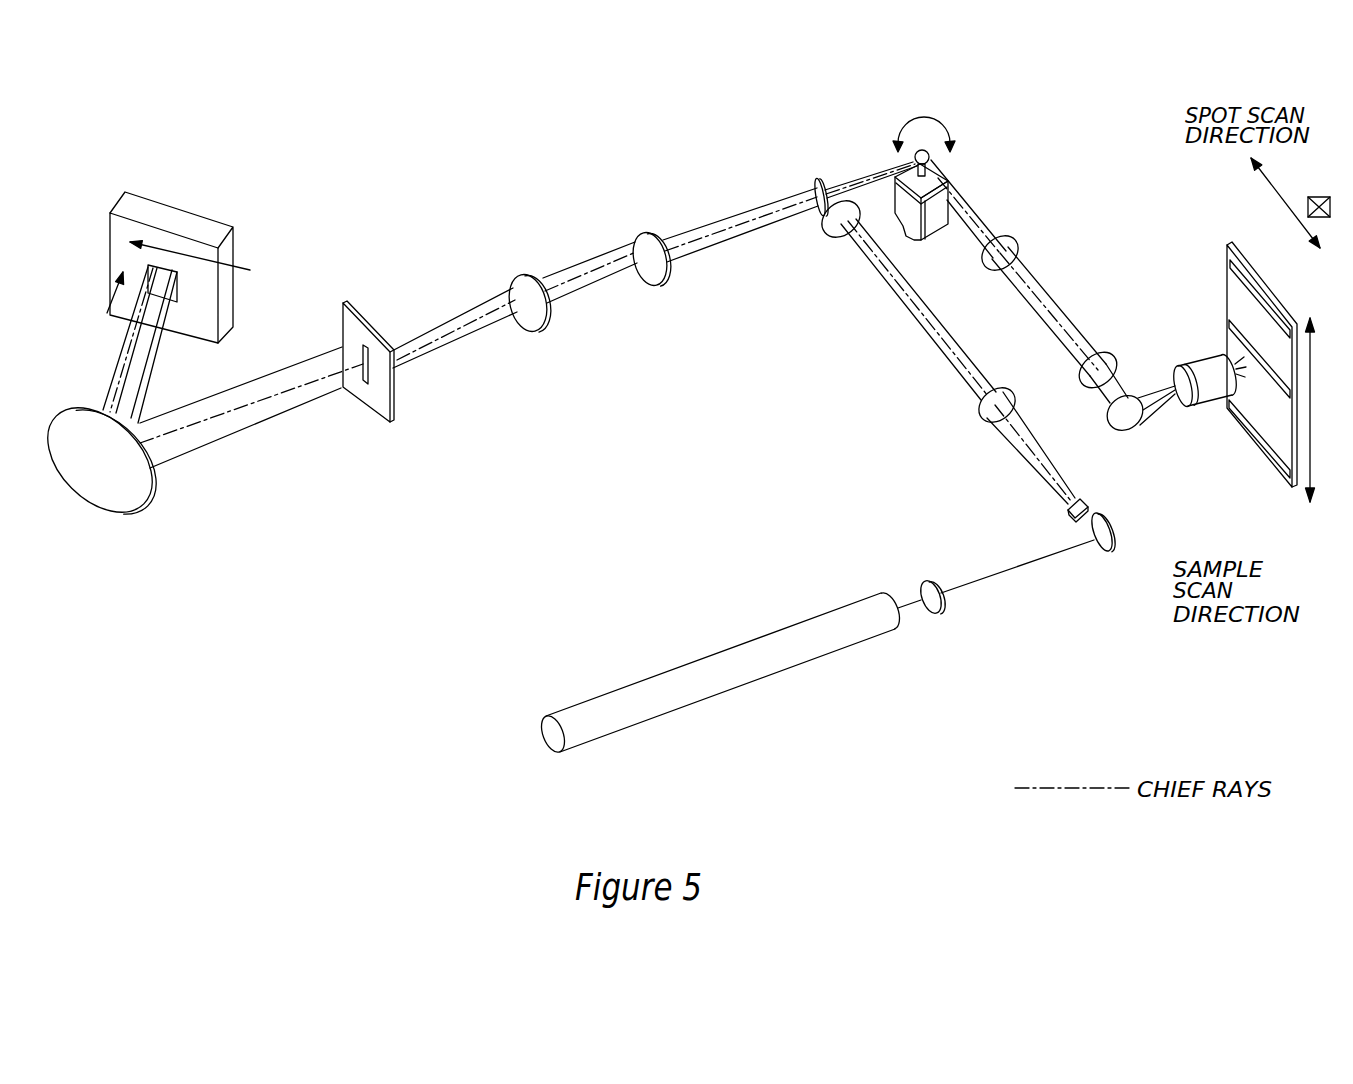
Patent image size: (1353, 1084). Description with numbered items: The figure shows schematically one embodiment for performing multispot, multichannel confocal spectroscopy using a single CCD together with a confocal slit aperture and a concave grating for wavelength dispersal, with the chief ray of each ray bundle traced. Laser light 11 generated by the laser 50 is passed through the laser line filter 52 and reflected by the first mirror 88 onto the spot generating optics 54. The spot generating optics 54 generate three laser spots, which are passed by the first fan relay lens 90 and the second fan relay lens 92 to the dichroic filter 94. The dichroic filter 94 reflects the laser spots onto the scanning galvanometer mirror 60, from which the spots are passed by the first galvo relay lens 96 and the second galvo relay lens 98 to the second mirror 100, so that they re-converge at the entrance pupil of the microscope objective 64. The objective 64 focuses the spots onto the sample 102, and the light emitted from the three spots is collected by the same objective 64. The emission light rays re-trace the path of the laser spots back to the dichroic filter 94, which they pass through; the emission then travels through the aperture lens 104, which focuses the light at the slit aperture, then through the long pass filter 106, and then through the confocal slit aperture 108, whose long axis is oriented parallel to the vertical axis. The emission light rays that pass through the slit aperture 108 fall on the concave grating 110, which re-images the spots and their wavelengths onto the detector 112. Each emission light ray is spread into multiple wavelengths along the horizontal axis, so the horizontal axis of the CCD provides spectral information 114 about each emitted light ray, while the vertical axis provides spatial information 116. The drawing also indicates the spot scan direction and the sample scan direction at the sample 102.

The laser light 11 is at (972, 585).
The laser 50 is at (792, 628).
The laser line filter 52 is at (942, 608).
The spot generating optics 54 is at (1070, 500).
The scanning galvanometer mirror 60 is at (931, 173).
The microscope objective 64 is at (1196, 372).
The mirror 1 88 is at (1108, 553).
The fan relay lense 1 90 is at (977, 406).
The fan relay lense 2 92 is at (840, 222).
The dichroic filter 94 is at (820, 180).
The galvo relay lense 1 96 is at (1013, 246).
The galvo relay lense 2 98 is at (1087, 367).
The mirror 2 100 is at (1128, 420).
The sample 102 is at (1277, 447).
The aperture lens 104 is at (650, 240).
The long pass filter 106 is at (535, 323).
The confocal slit aperture 108 is at (377, 400).
The concave grating 110 is at (72, 475).
The detector 112 is at (138, 203).
The spectral information 114 is at (210, 262).
The spatial information 116 is at (101, 312).